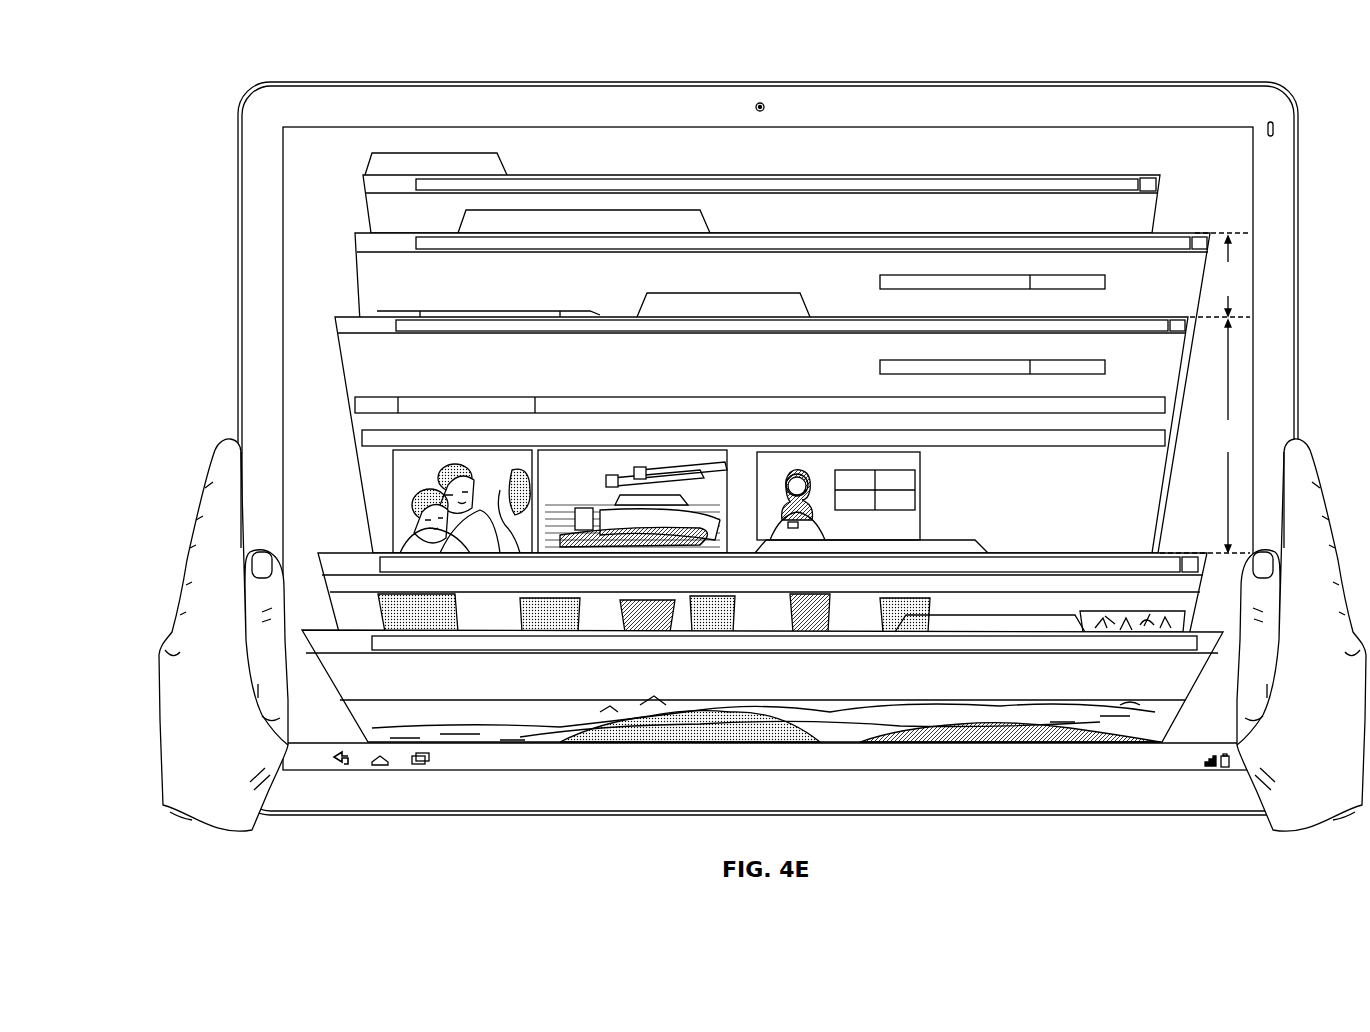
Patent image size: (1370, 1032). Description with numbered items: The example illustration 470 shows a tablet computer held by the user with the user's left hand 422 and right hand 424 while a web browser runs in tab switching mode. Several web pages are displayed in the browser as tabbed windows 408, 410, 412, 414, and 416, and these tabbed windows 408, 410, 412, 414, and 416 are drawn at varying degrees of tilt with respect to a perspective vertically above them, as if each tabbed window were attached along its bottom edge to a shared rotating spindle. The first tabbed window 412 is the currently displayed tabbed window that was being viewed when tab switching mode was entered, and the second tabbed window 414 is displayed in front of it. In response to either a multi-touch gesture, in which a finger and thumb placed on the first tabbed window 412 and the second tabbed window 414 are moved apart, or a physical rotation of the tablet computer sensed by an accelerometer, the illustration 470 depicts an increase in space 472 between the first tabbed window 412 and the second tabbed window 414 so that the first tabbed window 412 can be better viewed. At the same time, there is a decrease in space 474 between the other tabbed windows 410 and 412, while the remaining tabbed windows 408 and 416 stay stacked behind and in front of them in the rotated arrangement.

The example illustration 470 is at (768, 448).
The tabbed window 408 is at (367, 166).
The tabbed window 410 is at (624, 212).
The first tabbed window 412 is at (806, 302).
The second tabbed window 414 is at (986, 553).
The tabbed window 416 is at (1078, 632).
The left hand 422 is at (173, 517).
The right hand 424 is at (1356, 561).
The increase in space 472 is at (1205, 436).
The decrease in space 474 is at (1220, 275).